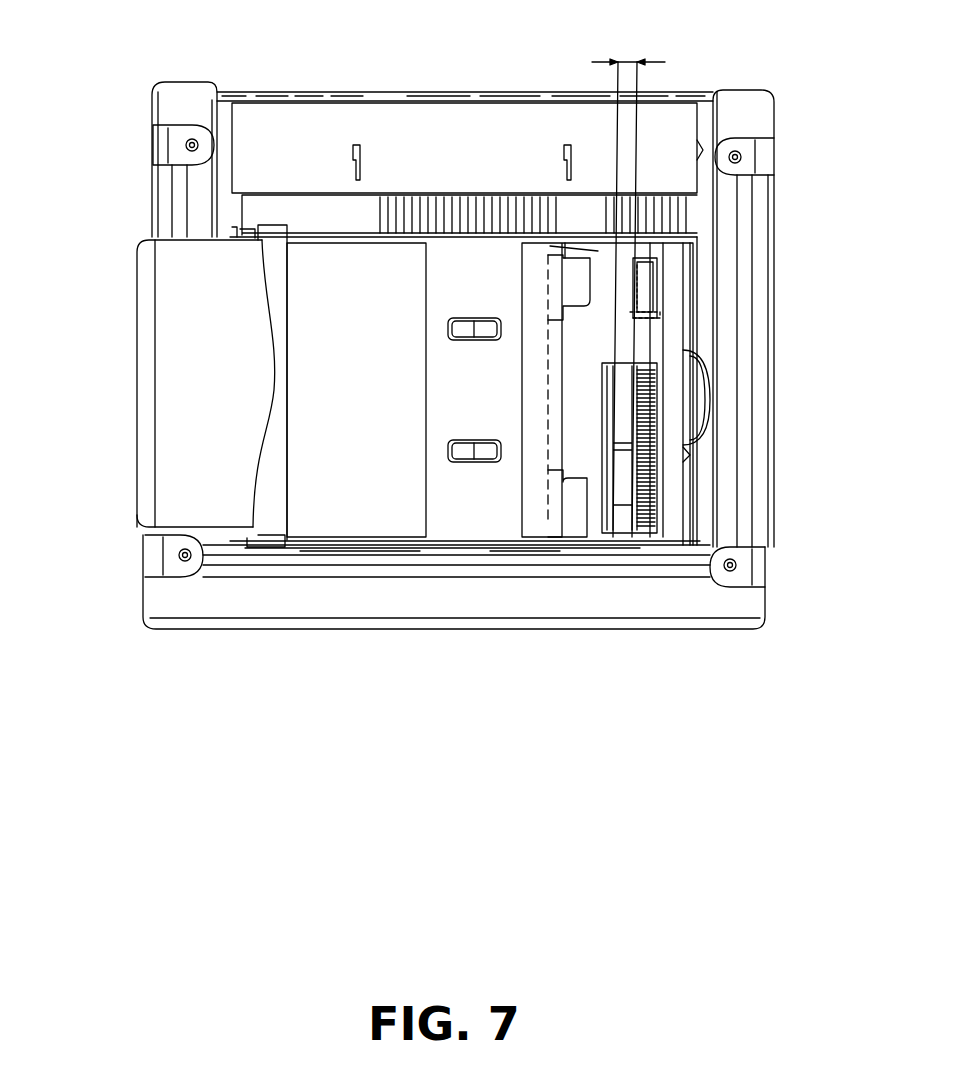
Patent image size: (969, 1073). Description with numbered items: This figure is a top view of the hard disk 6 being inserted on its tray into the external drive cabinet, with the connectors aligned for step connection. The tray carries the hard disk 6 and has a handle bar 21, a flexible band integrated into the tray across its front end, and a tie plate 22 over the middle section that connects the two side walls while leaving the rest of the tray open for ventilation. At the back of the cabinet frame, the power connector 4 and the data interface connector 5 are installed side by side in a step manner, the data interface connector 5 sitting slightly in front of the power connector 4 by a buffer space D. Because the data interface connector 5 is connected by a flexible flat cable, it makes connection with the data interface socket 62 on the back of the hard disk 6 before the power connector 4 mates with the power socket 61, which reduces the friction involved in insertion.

The power connector 4 is at (656, 283).
The data interface connector 5 is at (652, 422).
The hard disk 6 is at (190, 405).
The handle bar 21 is at (275, 290).
The tie plate 22 is at (472, 515).
The power socket 61 is at (550, 258).
The data interface socket 62 is at (548, 520).
The buffer space D is at (628, 288).